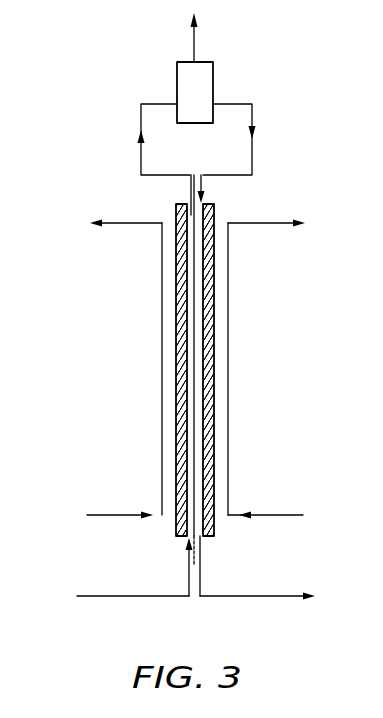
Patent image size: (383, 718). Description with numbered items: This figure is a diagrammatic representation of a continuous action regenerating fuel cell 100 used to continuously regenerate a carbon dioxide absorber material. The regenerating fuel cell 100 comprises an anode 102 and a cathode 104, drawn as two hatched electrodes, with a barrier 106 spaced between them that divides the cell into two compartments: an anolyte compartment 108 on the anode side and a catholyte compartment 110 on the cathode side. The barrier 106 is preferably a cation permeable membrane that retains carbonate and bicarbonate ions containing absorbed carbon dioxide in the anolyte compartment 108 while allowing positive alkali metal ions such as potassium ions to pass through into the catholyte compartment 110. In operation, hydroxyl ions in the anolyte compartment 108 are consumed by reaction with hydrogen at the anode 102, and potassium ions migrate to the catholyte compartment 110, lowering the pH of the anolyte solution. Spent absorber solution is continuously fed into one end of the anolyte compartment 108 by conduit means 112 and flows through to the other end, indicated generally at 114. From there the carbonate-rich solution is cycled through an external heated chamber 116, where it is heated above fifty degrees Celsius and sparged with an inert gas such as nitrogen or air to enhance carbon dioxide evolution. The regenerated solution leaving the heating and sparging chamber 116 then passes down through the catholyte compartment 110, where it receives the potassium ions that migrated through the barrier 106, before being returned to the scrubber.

The continuous action regenerating fuel cell 100 is at (104, 204).
The anode 102 is at (175, 518).
The cathode 104 is at (215, 525).
The barrier 106 is at (179, 527).
The anolyte compartment 108 is at (184, 405).
The catholyte compartment 110 is at (204, 496).
The conduit means 112 is at (146, 588).
The other end of anolyte compartment 114 is at (182, 193).
The external heated chamber 116 is at (214, 86).